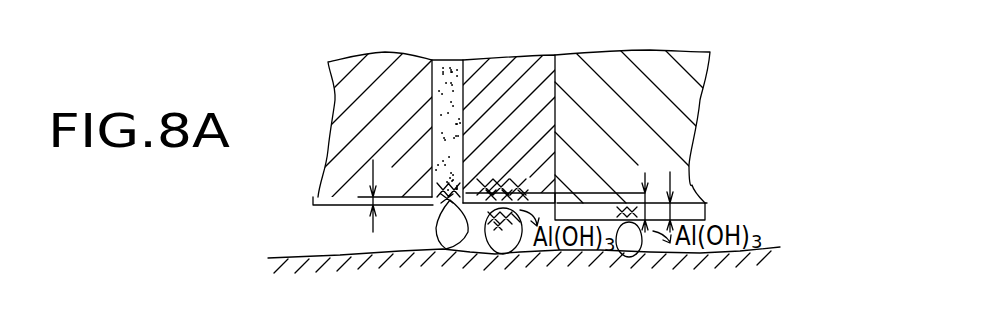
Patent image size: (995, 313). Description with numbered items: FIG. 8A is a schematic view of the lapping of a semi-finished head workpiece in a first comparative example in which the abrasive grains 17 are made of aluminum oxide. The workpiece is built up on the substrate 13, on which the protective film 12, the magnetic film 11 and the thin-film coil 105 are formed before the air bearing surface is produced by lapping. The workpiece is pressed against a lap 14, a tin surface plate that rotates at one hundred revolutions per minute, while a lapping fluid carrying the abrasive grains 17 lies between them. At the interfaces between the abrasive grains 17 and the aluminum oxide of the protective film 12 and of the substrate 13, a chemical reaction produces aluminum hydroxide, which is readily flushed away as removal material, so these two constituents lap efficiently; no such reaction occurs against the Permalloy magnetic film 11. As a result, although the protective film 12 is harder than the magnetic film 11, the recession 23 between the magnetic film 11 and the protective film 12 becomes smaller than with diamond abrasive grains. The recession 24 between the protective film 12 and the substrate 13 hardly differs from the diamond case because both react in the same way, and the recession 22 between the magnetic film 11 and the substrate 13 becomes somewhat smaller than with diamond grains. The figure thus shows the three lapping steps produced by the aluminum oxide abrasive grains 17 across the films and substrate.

The thin-film coil 105 is at (386, 63).
The magnetic film 11 is at (447, 63).
The protective film 12 is at (522, 62).
The substrate 13 is at (622, 62).
The recession 22 is at (648, 180).
The recession 23 is at (358, 197).
The recession 24 is at (707, 203).
The abrasive grains 17 is at (446, 251).
The lap 14 is at (693, 265).